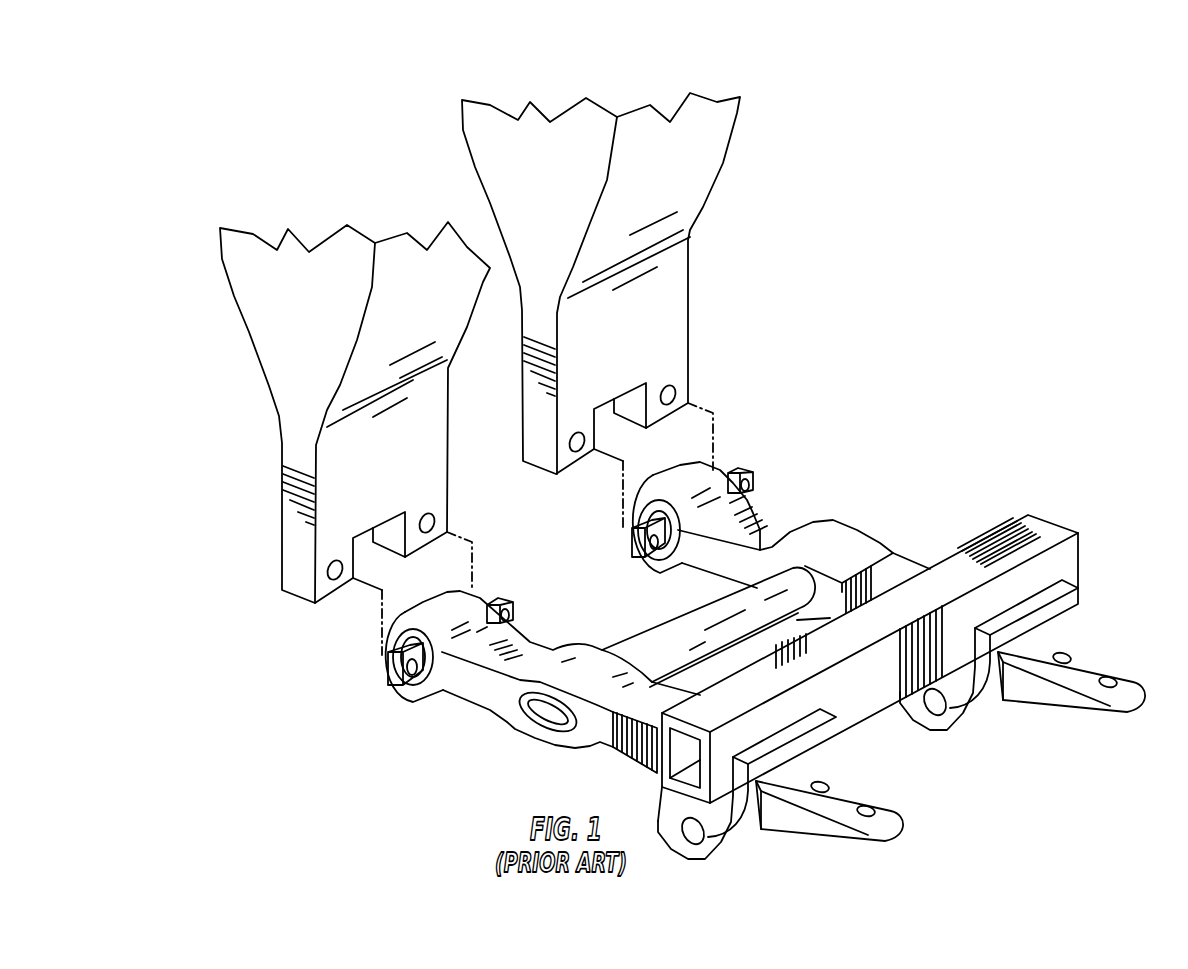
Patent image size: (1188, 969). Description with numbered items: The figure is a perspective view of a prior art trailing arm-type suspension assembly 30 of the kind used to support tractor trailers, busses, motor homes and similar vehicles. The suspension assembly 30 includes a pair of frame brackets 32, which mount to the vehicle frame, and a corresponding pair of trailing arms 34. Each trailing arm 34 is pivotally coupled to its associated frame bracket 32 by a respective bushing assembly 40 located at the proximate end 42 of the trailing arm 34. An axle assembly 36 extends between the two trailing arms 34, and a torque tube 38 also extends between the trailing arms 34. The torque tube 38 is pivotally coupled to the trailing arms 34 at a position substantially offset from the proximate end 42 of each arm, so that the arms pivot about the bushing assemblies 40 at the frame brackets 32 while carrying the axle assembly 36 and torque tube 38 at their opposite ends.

The suspension assembly 30 is at (881, 469).
The frame bracket 32 is at (665, 296).
The trailing arm 34 is at (767, 522).
The axle assembly 36 is at (855, 717).
The torque tube 38 is at (687, 612).
The bushing assembly 40 is at (498, 602).
The proximate end 42 is at (522, 630).